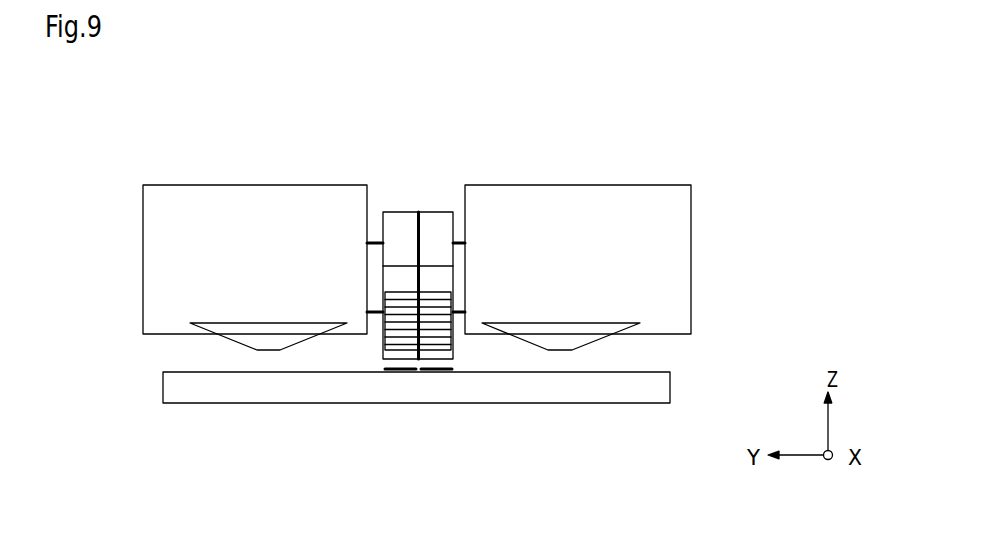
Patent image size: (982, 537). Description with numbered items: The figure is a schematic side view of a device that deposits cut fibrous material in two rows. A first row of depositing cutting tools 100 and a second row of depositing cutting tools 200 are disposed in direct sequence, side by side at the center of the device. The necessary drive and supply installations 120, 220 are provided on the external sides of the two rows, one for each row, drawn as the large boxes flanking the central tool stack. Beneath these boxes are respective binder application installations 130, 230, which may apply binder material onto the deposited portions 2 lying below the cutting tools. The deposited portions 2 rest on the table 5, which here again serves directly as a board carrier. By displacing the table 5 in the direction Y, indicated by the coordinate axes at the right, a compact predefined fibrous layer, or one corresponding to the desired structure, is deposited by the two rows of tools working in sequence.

The drive and supply installation 120 is at (232, 185).
The drive and supply installation 220 is at (557, 185).
The binder application installation 130 is at (246, 345).
The binder application installation 230 is at (600, 339).
The first row of depositing cutting tools 100 is at (399, 190).
The second row of depositing cutting tools 200 is at (440, 190).
The deposited portions 2 is at (402, 373).
The table 5 is at (593, 403).